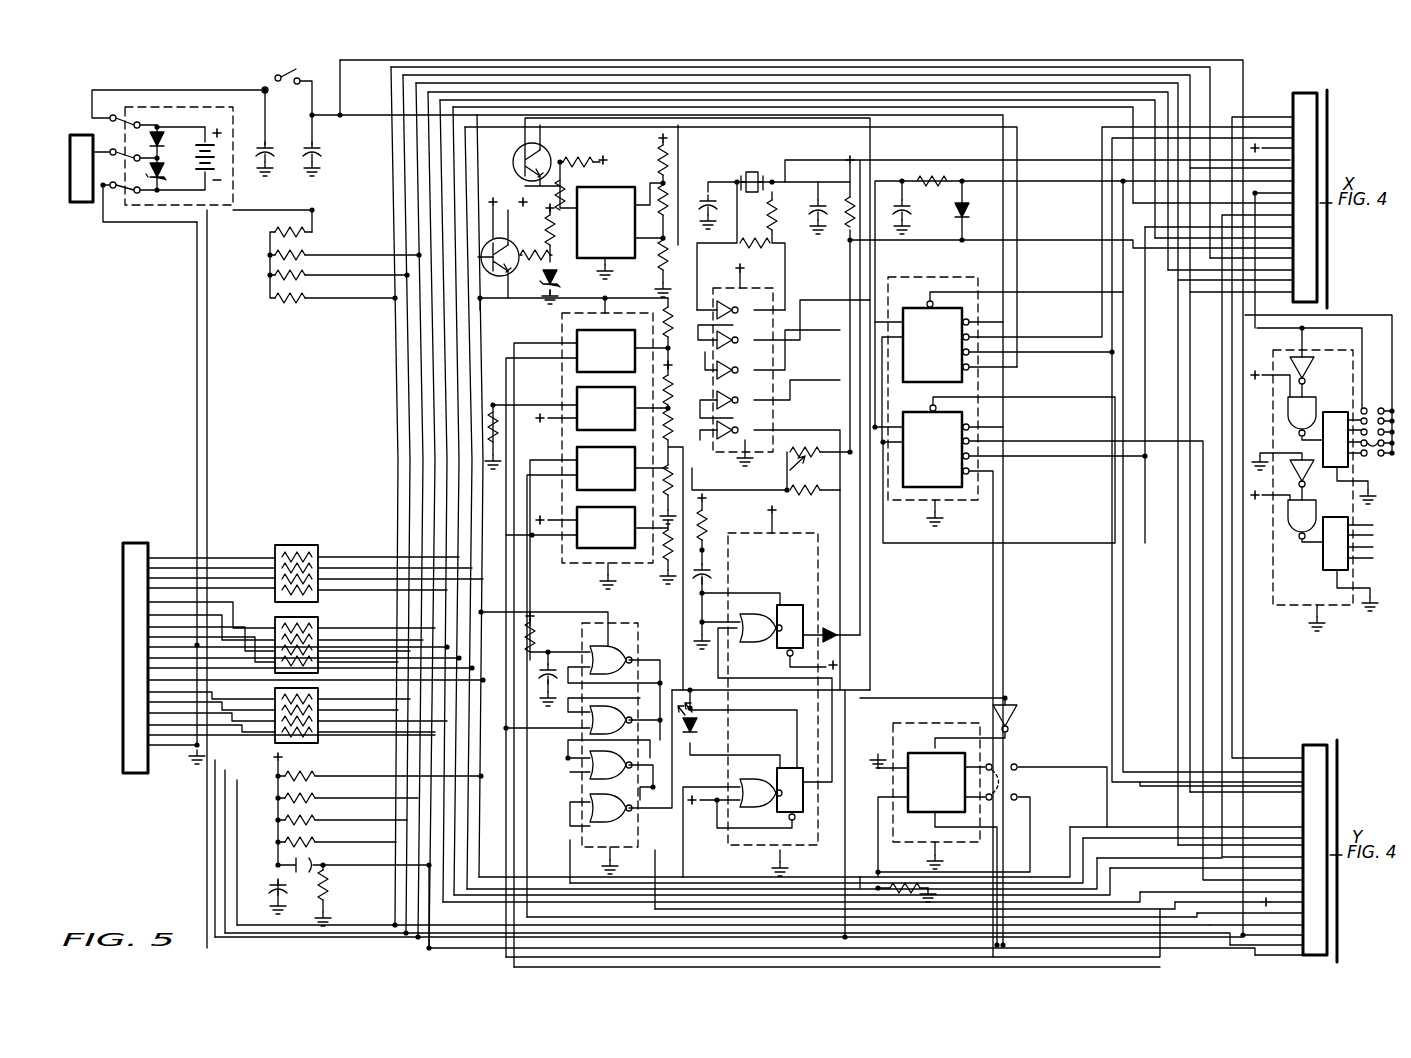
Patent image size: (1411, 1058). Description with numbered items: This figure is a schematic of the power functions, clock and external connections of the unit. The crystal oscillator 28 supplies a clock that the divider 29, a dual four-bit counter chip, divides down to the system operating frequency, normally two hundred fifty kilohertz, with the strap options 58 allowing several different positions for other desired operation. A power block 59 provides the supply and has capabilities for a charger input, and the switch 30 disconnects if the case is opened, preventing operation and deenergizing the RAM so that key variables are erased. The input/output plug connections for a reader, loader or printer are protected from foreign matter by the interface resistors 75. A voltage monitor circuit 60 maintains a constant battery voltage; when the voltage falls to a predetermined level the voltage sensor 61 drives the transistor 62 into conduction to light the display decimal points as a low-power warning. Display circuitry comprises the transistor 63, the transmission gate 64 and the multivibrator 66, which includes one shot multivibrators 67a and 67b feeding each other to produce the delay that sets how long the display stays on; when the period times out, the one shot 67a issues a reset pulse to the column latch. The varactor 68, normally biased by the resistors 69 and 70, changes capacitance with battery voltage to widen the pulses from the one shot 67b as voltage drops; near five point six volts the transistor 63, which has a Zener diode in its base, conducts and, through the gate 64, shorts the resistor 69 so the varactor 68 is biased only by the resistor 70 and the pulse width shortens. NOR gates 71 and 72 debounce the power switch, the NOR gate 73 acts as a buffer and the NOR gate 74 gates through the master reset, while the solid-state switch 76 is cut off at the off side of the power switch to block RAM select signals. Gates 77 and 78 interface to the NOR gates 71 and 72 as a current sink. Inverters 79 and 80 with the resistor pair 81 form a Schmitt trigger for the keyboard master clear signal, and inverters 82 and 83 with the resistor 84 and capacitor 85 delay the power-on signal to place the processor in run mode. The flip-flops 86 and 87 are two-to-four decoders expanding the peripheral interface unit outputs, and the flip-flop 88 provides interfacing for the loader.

The crystal oscillator 28 is at (745, 170).
The divider 29 is at (1292, 606).
The switch 30 is at (290, 86).
The strap options 58 is at (1369, 460).
The power block 59 is at (166, 76).
The voltage monitor circuit 60 is at (614, 166).
The voltage sensor 61 is at (618, 250).
The transistor 62 is at (518, 158).
The transistor 63 is at (520, 248).
The transmission gate 64 is at (620, 418).
The multivibrator 66 is at (812, 526).
The one shot multivibrator 67a is at (785, 615).
The one shot multivibrator 67b is at (792, 772).
The varactor 68 is at (695, 728).
The resistor 69 is at (672, 395).
The resistor 70 is at (668, 430).
The NOR gate 71 is at (630, 652).
The NOR gate 72 is at (585, 721).
The NOR gate 73 is at (585, 770).
The NOR gate 74 is at (585, 805).
The interface resistors 75 is at (301, 538).
The solid-state switch 76 is at (620, 361).
The gate 77 is at (620, 478).
The gate 78 is at (620, 538).
The inverter 79 is at (735, 440).
The inverter 80 is at (754, 403).
The resistor pair 81 is at (790, 465).
The inverter 82 is at (754, 375).
The inverter 83 is at (754, 345).
The resistor 84 is at (922, 186).
The capacitor 85 is at (917, 210).
The flip-flop 86 is at (948, 356).
The flip-flop 87 is at (948, 460).
The flip-flop 88 is at (953, 793).